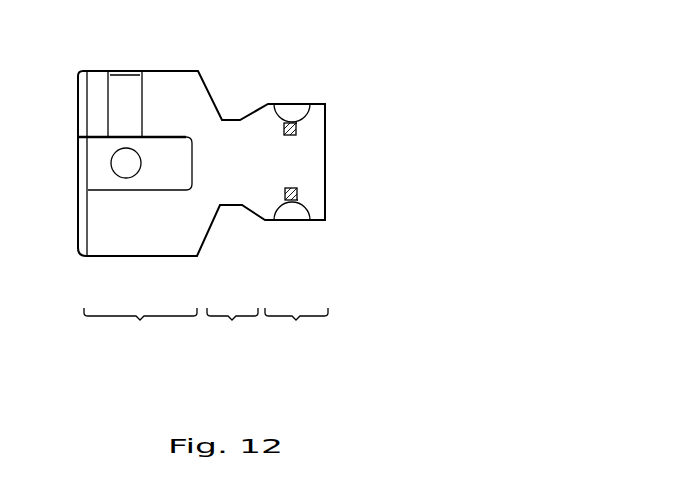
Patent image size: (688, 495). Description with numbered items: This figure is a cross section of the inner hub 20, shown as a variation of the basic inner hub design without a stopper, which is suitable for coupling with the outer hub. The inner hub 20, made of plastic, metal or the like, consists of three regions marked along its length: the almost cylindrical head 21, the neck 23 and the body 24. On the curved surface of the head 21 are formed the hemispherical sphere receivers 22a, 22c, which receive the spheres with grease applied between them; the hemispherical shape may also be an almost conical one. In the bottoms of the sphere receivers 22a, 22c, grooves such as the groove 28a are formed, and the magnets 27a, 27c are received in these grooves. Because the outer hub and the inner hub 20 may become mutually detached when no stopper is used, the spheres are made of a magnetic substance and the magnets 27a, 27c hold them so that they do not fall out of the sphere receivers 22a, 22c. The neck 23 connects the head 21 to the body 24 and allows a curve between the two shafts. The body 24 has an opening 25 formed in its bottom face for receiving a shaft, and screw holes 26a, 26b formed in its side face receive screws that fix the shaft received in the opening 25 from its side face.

The inner hub 20 is at (222, 91).
The head 21 is at (296, 326).
The sphere receiver 22a is at (296, 108).
The sphere receiver 22c is at (303, 217).
The neck 23 is at (232, 326).
The body 24 is at (140, 326).
The opening 25 is at (92, 185).
The screw hole 26a is at (123, 73).
The screw hole 26b is at (118, 152).
The magnet 27a is at (297, 134).
The magnet 27c is at (299, 190).
The groove 28a is at (297, 124).